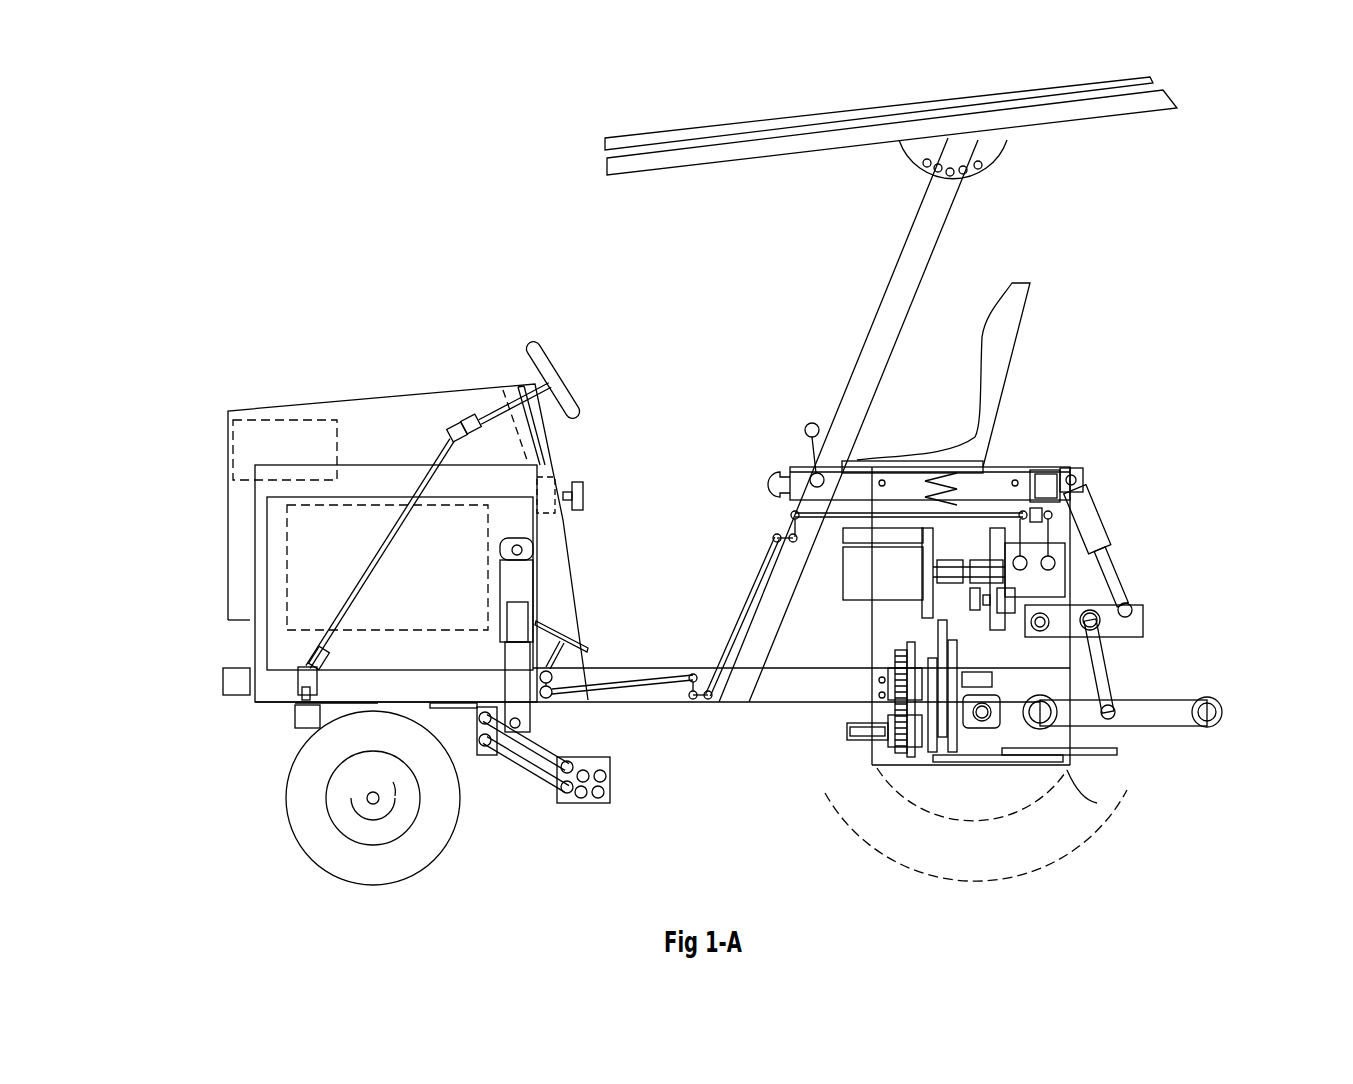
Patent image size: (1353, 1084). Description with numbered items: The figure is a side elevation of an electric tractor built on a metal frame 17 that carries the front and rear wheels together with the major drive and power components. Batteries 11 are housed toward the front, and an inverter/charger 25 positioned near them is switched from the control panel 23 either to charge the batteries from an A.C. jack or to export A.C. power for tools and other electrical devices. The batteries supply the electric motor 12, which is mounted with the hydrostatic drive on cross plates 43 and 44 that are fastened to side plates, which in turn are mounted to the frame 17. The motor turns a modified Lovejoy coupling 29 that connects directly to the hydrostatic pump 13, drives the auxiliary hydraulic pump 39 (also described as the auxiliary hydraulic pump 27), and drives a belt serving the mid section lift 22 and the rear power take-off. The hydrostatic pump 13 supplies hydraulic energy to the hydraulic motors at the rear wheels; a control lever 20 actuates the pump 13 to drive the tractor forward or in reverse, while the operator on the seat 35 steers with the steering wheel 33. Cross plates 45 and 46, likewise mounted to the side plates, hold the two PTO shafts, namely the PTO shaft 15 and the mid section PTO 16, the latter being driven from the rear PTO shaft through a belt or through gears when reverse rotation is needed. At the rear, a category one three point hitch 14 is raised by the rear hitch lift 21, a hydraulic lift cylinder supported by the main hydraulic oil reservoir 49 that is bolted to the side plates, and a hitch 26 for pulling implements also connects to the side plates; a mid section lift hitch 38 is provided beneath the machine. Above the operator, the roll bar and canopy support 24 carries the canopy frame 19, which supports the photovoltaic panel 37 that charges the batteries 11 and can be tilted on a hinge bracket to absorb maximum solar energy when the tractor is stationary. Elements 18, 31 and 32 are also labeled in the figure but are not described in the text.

The batteries 11 is at (333, 575).
The electric motor 12 is at (863, 580).
The hydrostatic pump 13 is at (1090, 517).
The category 1 three point hitch 14 is at (840, 535).
The PTO shaft 15 is at (1040, 690).
The mid section PTO 16 is at (847, 730).
The metal frame 17 is at (835, 686).
The control knob 18 is at (812, 423).
The canopy frame 19 is at (667, 158).
The control lever 20 is at (550, 627).
The rear hitch lift 21 is at (1043, 482).
The mid section lift 22 is at (520, 580).
The control panel 23 is at (540, 430).
The roll bar and canopy support 24 is at (930, 247).
The inverter/charger 25 is at (283, 453).
The hitch 26 is at (1127, 790).
The auxiliary hydraulic pump 27 is at (1055, 560).
The modified Lovejoy coupling 29 is at (1000, 483).
The control rod 31 is at (607, 690).
The seat back 32 is at (548, 466).
The steering wheel 33 is at (542, 358).
The seat 35 is at (897, 657).
The photovoltaic panel 37 is at (970, 100).
The mid section lift hitch 38 is at (605, 765).
The auxiliary hydraulic pump 39 is at (772, 482).
The cross plate 43 is at (1040, 612).
The cross plate 44 is at (1010, 652).
The cross plate 45 is at (910, 753).
The cross plate 46 is at (967, 747).
The main hydraulic oil reservoir 49 is at (1123, 490).